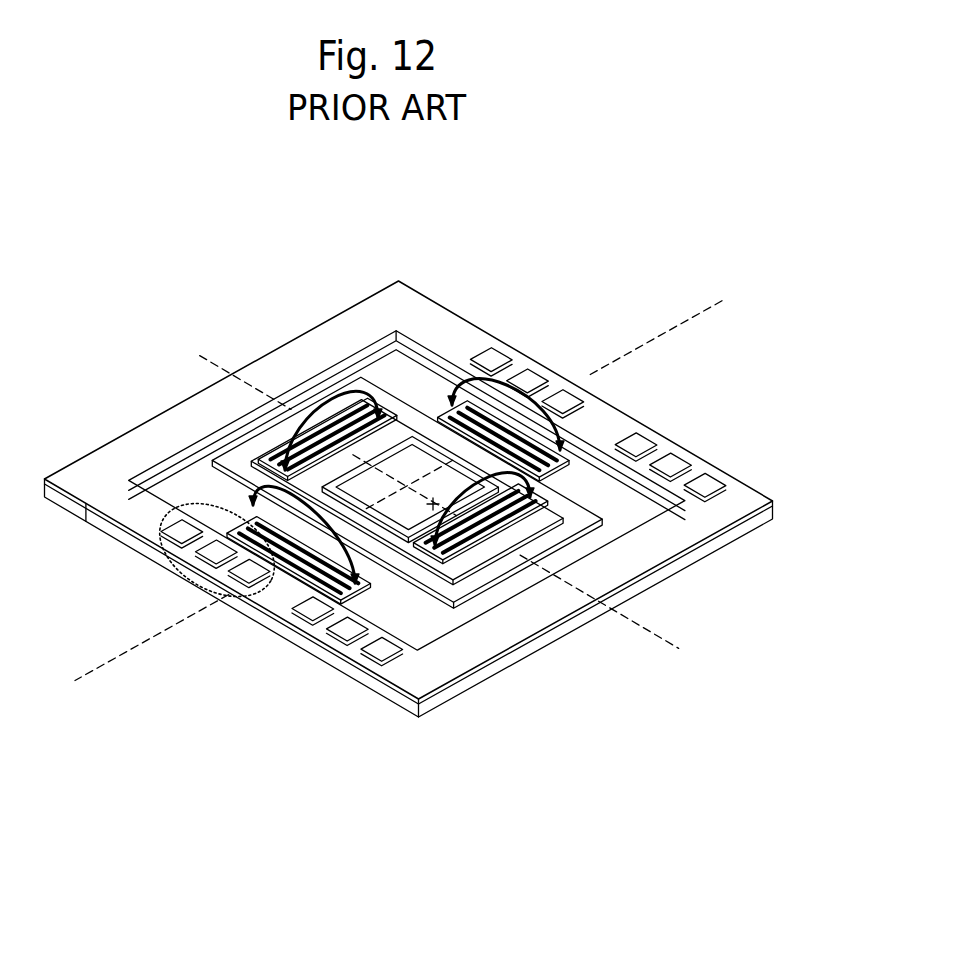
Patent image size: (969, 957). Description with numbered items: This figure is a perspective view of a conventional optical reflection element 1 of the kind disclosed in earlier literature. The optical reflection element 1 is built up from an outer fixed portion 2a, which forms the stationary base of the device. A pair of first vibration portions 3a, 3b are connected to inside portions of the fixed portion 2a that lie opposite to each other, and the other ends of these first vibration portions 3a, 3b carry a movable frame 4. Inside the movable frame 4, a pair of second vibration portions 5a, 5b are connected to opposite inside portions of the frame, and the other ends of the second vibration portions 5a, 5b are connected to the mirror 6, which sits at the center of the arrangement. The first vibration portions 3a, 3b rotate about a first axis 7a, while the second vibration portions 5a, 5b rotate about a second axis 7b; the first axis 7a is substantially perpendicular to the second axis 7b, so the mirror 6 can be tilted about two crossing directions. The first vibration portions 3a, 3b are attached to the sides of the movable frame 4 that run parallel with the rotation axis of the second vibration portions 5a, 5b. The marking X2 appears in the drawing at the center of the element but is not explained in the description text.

The optical reflection element 1 is at (477, 288).
The fixed portion 2a is at (745, 503).
The first vibration portion 3a is at (252, 512).
The first vibration portion 3b is at (452, 396).
The movable frame 4 is at (372, 412).
The second vibration portion 5a is at (480, 558).
The second vibration portion 5b is at (272, 458).
The mirror 6 is at (402, 492).
The first axis 7a is at (672, 331).
The second axis 7b is at (615, 612).
The center position X2 is at (433, 507).